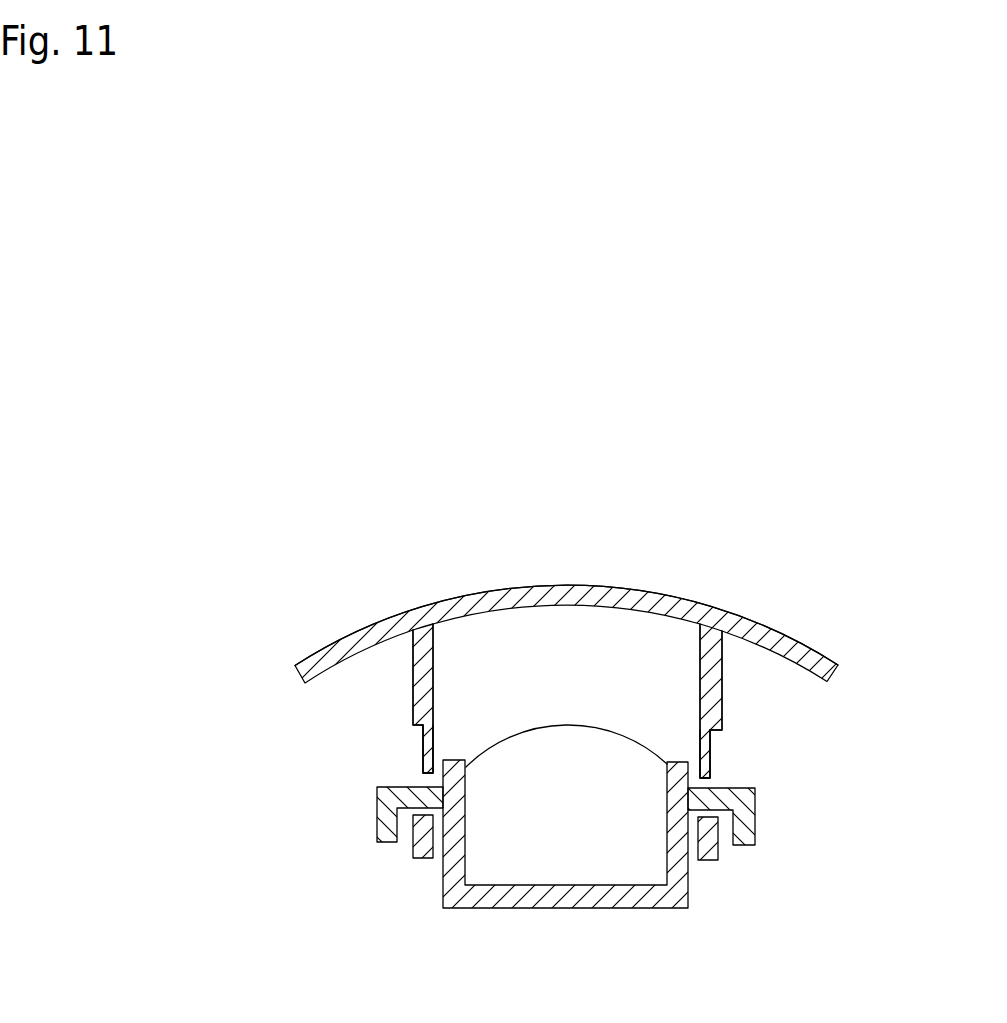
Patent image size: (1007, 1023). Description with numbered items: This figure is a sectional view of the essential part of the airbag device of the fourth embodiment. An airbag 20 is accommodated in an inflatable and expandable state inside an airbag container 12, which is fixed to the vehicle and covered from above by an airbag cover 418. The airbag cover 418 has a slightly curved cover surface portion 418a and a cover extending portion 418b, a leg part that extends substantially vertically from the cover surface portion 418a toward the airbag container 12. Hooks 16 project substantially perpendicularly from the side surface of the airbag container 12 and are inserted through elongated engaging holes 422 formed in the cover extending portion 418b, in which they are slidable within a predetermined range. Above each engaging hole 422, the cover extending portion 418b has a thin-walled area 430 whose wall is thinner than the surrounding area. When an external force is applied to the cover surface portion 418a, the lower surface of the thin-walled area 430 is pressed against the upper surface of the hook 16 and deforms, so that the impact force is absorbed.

The airbag container 12 is at (643, 908).
The hook 16 is at (755, 818).
The airbag 20 is at (530, 745).
The airbag cover 418 is at (755, 600).
The cover surface portion 418a is at (597, 588).
The cover extending portion 418b is at (722, 702).
The engaging hole 422 is at (710, 780).
The thin-walled area 430 is at (422, 728).